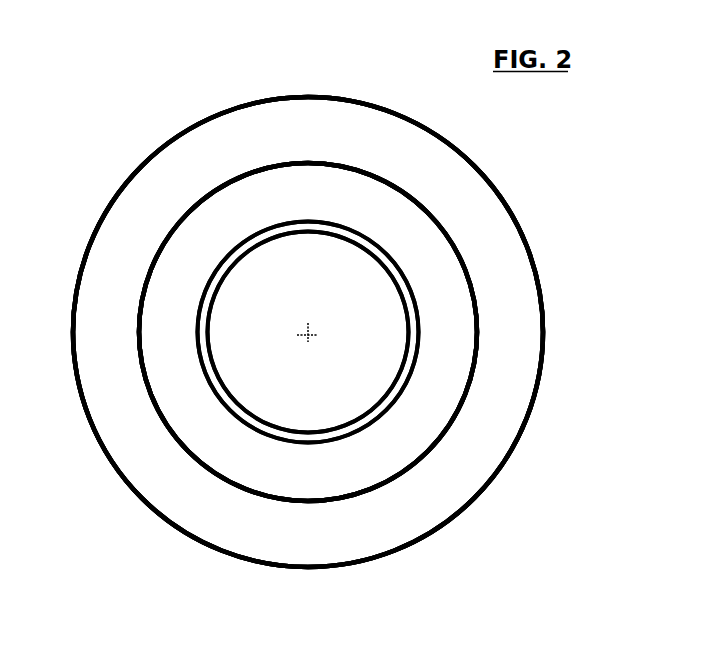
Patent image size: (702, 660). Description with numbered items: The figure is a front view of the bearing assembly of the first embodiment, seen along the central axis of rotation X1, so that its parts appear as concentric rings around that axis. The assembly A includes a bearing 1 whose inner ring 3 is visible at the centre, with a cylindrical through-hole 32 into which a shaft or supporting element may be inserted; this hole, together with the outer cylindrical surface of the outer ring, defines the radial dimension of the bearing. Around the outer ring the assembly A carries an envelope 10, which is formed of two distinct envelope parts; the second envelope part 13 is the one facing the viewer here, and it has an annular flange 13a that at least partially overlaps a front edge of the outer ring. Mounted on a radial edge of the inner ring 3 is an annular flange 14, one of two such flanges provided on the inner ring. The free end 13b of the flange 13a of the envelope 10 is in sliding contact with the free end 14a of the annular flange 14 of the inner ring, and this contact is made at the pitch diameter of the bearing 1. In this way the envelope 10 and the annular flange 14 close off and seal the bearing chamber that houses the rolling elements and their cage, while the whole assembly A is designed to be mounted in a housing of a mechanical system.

The assembly A is at (575, 130).
The bearing 1 is at (522, 227).
The envelope 10 is at (519, 446).
The second envelope part 13 is at (98, 390).
The annular flange of the second envelope part 13a is at (80, 353).
The free end of the flange of the second envelope part 13b is at (213, 460).
The annular flange 14 is at (182, 420).
The free end of the annular flange 14a is at (284, 503).
The inner ring 3 is at (399, 293).
The cylindrical through-hole 32 is at (378, 263).
The central axis of rotation X1 is at (315, 329).